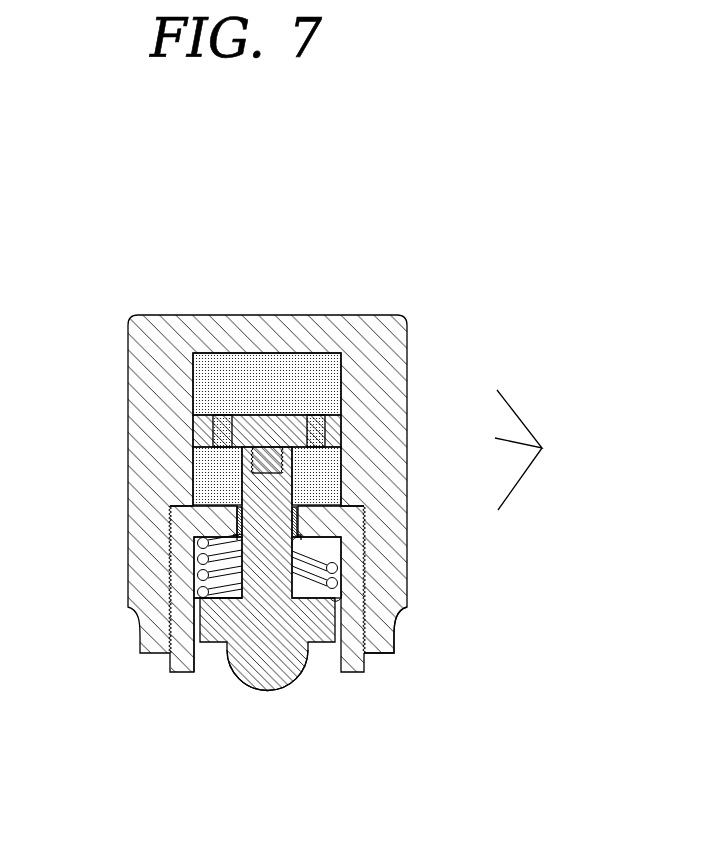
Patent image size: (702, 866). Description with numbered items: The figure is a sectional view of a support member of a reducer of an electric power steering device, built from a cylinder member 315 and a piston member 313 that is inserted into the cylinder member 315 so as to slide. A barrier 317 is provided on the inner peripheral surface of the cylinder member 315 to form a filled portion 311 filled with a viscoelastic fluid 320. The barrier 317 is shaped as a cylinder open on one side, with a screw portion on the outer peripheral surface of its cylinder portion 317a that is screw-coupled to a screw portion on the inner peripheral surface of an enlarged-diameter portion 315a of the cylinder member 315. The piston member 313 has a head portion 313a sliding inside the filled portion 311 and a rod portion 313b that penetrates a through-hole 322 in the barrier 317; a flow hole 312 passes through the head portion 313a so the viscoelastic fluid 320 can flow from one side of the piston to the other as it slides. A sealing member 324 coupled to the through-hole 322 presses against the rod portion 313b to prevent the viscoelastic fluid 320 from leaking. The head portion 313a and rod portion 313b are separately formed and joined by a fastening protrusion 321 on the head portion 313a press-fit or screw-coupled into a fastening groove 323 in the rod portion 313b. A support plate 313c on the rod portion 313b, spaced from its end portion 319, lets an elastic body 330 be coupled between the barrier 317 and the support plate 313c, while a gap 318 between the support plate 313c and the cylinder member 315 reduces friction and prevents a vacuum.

The filled portion 311 is at (268, 352).
The viscoelastic fluid 320 is at (320, 362).
The cylinder member 315 is at (150, 390).
The enlarged-diameter portion 315a is at (367, 608).
The flow hole 312 is at (213, 428).
The piston member 313 is at (390, 533).
The head portion 313a is at (337, 423).
The rod portion 313b is at (275, 501).
The support plate 313c is at (327, 615).
The fastening protrusion 321 is at (252, 463).
The fastening groove 323 is at (275, 473).
The through-hole 322 is at (244, 518).
The barrier 317 is at (217, 522).
The cylinder portion 317a is at (188, 590).
The sealing member 324 is at (237, 538).
The elastic body 330 is at (200, 598).
The gap 318 is at (195, 633).
The end portion 319 is at (267, 692).